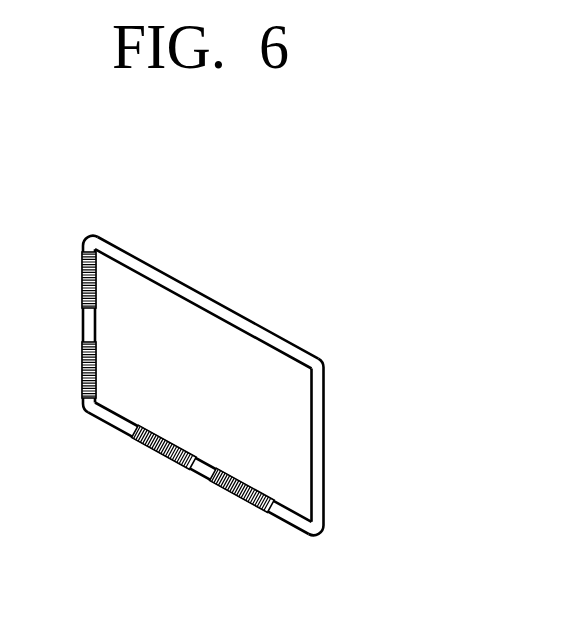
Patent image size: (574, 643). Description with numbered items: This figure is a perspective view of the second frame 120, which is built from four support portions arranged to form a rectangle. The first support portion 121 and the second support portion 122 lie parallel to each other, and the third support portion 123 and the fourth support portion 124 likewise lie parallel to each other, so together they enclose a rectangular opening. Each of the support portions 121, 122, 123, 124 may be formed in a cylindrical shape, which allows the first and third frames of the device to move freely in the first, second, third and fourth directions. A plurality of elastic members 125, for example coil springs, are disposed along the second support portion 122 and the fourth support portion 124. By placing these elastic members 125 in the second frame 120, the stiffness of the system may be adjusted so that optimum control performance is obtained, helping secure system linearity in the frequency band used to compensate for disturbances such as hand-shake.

The second frame 120 is at (360, 192).
The first support portion 121 is at (215, 303).
The second support portion 122 is at (278, 518).
The third support portion 123 is at (323, 456).
The fourth support portion 124 is at (83, 317).
The elastic member 125 is at (230, 495).